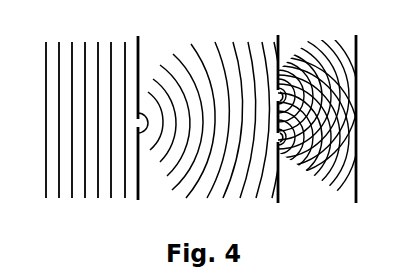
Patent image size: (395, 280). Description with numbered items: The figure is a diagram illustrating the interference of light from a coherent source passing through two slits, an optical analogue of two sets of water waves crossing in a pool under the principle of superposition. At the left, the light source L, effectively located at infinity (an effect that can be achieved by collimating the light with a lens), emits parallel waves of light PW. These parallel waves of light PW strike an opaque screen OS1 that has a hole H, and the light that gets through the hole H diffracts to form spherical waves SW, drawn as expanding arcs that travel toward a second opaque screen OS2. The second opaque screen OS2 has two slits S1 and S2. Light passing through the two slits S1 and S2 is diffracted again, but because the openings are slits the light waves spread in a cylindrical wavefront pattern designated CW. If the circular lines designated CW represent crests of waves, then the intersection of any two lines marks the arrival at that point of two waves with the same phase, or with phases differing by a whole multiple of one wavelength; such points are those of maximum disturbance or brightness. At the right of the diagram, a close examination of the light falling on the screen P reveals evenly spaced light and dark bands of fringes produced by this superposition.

The light source L is at (35, 119).
The parallel waves of light PW is at (85, 107).
The opaque screen OS1 is at (140, 135).
The hole H is at (136, 127).
The spherical waves SW is at (215, 107).
The second opaque screen OS2 is at (283, 134).
The slit S1 is at (270, 150).
The slit S2 is at (270, 92).
The cylindrical wavefront pattern CW is at (318, 116).
The screen P is at (359, 132).